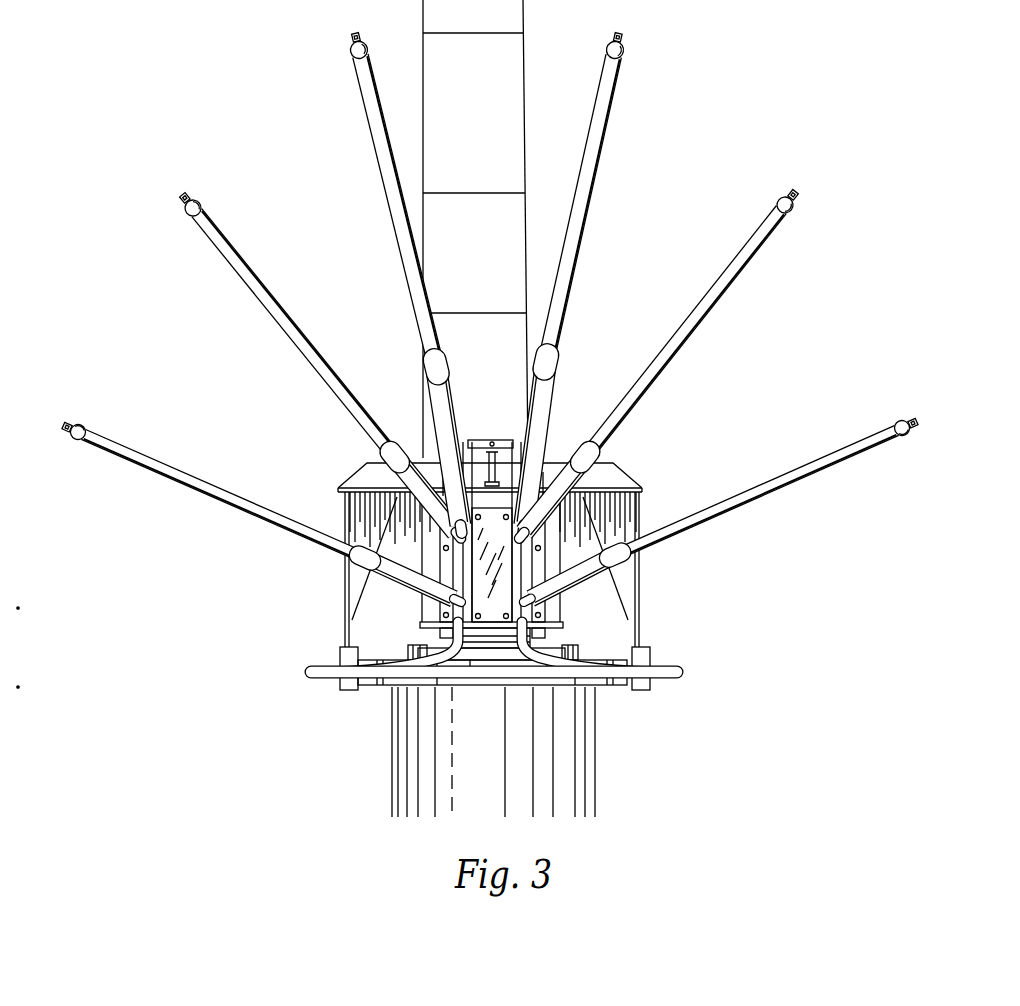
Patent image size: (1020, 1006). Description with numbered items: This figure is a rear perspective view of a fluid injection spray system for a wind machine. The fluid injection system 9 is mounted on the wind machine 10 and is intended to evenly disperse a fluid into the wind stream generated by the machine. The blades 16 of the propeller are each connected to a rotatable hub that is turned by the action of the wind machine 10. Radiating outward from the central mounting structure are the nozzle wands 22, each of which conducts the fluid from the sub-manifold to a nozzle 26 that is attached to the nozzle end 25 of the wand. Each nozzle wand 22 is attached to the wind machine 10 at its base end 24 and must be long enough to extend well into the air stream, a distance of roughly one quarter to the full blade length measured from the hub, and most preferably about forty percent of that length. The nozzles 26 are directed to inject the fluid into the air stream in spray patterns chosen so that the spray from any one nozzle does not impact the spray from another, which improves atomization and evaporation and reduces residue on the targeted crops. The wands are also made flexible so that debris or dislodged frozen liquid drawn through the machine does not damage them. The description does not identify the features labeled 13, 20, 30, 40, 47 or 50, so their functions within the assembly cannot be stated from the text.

The fluid injection system 9 is at (212, 603).
The wind machine 10 is at (738, 402).
The support column 13 is at (572, 745).
The blades 16 is at (504, 100).
The arm 20 is at (178, 522).
The nozzle wand 22 is at (308, 354).
The base end 24 is at (437, 520).
The nozzle end 25 is at (193, 208).
The nozzle 26 is at (185, 198).
The base flange 30 is at (612, 685).
The pipe ring 40 is at (335, 680).
The hydraulic cylinder 47 is at (517, 552).
The mounting plate 50 is at (516, 597).